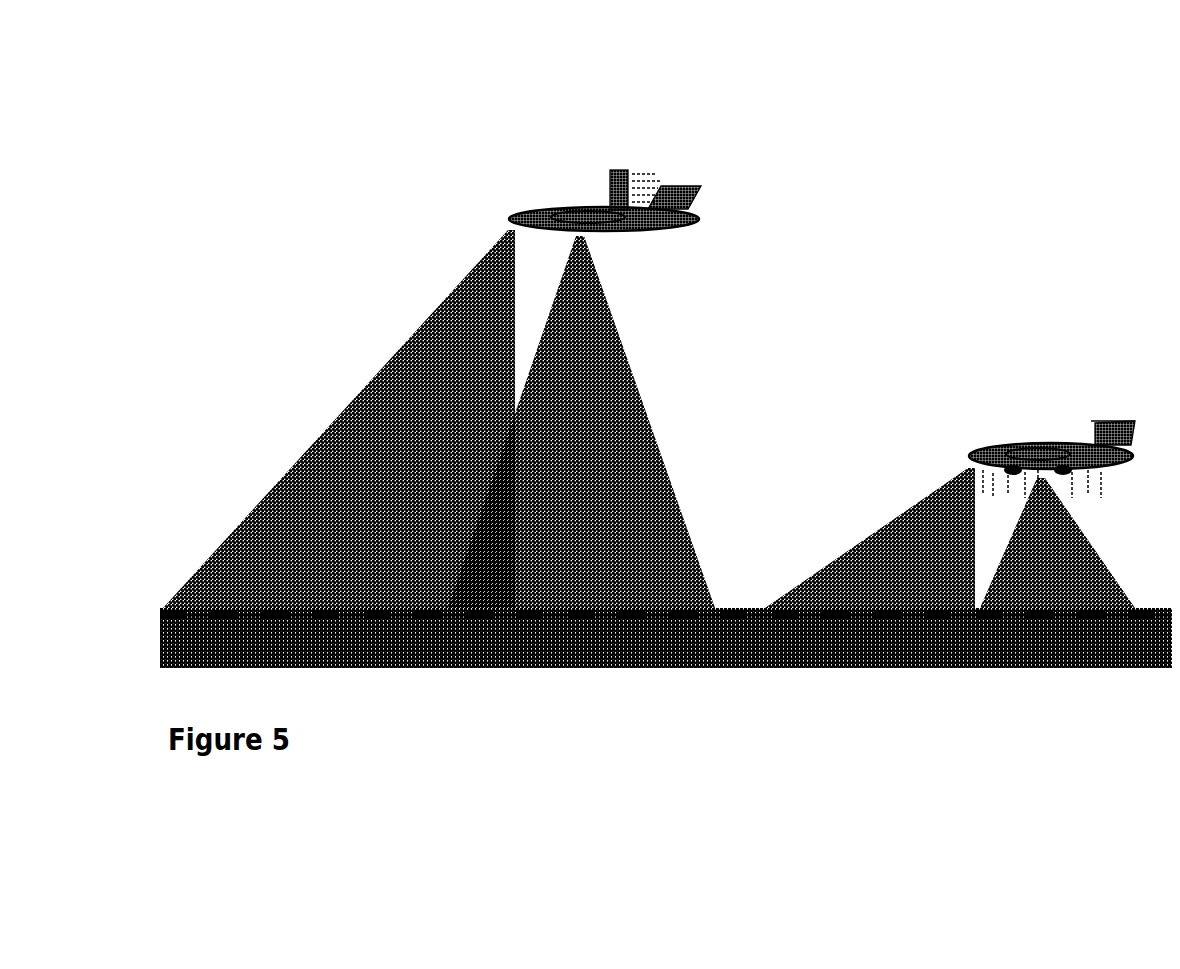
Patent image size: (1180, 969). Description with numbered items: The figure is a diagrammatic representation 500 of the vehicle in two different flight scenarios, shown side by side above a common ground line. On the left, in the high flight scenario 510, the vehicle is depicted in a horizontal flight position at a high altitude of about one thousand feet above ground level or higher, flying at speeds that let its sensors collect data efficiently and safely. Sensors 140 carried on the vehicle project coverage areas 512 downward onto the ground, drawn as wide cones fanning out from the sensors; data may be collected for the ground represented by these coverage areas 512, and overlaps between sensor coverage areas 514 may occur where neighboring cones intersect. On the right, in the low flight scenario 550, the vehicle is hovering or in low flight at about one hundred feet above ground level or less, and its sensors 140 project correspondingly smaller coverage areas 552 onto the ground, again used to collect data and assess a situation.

The diagrammatic representation 500 is at (285, 117).
The high flight scenario 510 is at (523, 183).
The low flight scenario 550 is at (1000, 415).
The sensors 140 is at (500, 213).
The coverage areas 512 is at (310, 440).
The overlaps between sensor coverage areas 514 is at (507, 513).
The coverage areas 552 is at (830, 556).